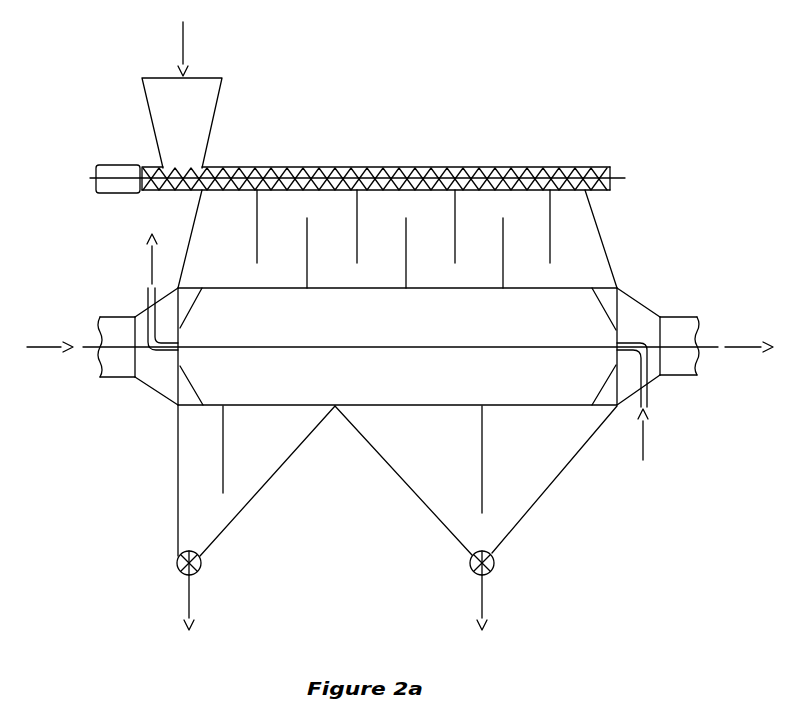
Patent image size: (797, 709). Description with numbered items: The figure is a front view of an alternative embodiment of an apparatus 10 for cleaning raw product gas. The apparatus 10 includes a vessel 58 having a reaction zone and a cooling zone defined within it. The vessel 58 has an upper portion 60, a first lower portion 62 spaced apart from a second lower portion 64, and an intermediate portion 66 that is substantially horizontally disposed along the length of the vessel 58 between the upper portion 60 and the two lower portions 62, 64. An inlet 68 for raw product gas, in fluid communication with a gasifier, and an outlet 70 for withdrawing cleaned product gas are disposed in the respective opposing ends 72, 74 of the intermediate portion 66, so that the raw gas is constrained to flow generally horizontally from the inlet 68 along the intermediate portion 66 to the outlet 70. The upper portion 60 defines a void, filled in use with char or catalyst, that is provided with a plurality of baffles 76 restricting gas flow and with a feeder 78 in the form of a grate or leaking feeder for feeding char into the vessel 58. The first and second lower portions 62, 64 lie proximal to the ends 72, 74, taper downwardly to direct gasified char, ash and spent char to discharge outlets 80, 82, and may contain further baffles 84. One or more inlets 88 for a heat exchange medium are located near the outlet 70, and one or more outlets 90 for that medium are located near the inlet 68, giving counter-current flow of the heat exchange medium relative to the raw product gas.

The apparatus 10 is at (622, 101).
The vessel 58 is at (646, 230).
The upper portion 60 is at (181, 221).
The first lower portion 62 is at (248, 507).
The second lower portion 64 is at (548, 493).
The intermediate portion 66 is at (620, 291).
The inlet 68 is at (100, 373).
The outlet 70 is at (702, 364).
The first end 72 is at (135, 317).
The second end 74 is at (658, 314).
The baffles 76 is at (307, 241).
The feeder 78 is at (215, 120).
The discharge outlet 80 is at (203, 567).
The discharge outlet 82 is at (495, 567).
The baffles 84 is at (224, 448).
The inlet for heat exchange medium 88 is at (648, 398).
The outlet for heat exchange medium 90 is at (148, 291).